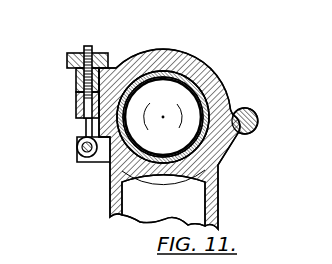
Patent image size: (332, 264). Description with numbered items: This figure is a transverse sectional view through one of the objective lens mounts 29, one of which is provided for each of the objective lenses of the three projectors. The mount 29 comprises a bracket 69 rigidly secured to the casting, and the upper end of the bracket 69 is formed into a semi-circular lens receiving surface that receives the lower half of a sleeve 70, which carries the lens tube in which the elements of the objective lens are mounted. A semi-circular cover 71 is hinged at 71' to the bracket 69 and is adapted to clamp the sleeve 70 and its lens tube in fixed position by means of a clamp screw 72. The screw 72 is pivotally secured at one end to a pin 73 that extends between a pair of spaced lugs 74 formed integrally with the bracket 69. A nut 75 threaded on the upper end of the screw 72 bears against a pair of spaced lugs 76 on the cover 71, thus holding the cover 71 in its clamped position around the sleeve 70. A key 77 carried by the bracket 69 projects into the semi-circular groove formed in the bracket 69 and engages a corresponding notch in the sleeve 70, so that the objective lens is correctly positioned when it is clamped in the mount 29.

The objective lens mount 29 is at (234, 84).
The bracket 69 is at (219, 200).
The sleeve 70 is at (164, 58).
The semi-circular cover 71 is at (169, 137).
The hinge 71' is at (256, 116).
The clamp screw 72 is at (86, 125).
The pin 73 is at (77, 162).
The spaced lugs 74 is at (77, 140).
The nut 75 is at (76, 79).
The spaced lugs 76 is at (77, 104).
The key 77 is at (164, 187).